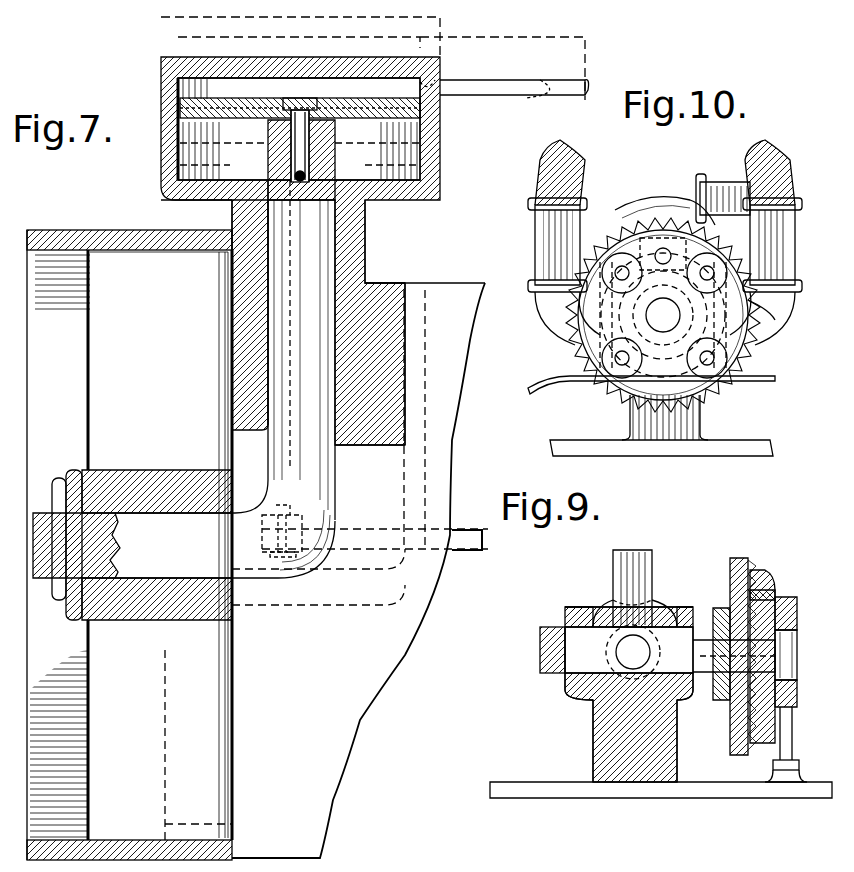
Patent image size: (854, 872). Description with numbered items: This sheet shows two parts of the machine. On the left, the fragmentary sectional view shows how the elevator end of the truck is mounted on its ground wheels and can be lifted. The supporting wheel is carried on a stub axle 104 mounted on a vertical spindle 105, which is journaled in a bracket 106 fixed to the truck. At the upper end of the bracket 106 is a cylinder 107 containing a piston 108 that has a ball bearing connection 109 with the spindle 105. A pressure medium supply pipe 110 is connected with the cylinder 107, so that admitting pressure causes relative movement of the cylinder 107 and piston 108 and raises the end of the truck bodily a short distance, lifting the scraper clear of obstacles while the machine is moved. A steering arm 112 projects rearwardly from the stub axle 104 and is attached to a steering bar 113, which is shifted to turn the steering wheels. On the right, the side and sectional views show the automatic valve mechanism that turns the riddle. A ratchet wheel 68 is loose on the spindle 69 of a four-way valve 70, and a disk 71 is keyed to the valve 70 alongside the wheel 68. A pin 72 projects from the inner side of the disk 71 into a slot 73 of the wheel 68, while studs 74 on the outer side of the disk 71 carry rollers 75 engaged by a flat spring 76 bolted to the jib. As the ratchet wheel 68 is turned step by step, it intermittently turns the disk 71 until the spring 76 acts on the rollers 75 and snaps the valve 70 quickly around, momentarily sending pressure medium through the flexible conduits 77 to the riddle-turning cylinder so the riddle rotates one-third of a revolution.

In FIG. 10, the ratchet wheel 68 is at (695, 215).
In FIG. 9, the ratchet wheel 68 is at (745, 560).
In FIG. 10, the spindle 69 is at (663, 315).
In FIG. 9, the spindle 69 is at (700, 640).
In FIG. 10, the four-way valve 70 is at (775, 310).
In FIG. 9, the four-way valve 70 is at (660, 605).
In FIG. 10, the disk 71 is at (710, 402).
In FIG. 9, the disk 71 is at (768, 585).
In FIG. 10, the pin 72 is at (660, 248).
In FIG. 9, the pin 72 is at (777, 596).
In FIG. 10, the slot 73 is at (650, 242).
In FIG. 9, the slot 73 is at (715, 605).
In FIG. 10, the studs 74 is at (636, 345).
In FIG. 9, the studs 74 is at (797, 692).
In FIG. 10, the rollers 75 is at (608, 266).
In FIG. 9, the rollers 75 is at (797, 672).
In FIG. 10, the flat spring 76 is at (563, 380).
In FIG. 9, the flat spring 76 is at (790, 735).
In FIG. 10, the flexible conduits 77 is at (718, 180).
In FIG. 9, the flexible conduits 77 is at (632, 572).
In FIG. 7, the stub axles 104 is at (232, 612).
In FIG. 7, the vertical spindles 105 is at (300, 326).
In FIG. 7, the brackets 106 is at (345, 268).
In FIG. 7, the cylinders 107 is at (428, 140).
In FIG. 7, the piston 108 is at (422, 80).
In FIG. 7, the ball bearing connection 109 is at (318, 154).
In FIG. 7, the pressure medium supply pipe 110 is at (583, 96).
In FIG. 7, the steering arms 112 is at (302, 518).
In FIG. 7, the steering bar 113 is at (468, 550).